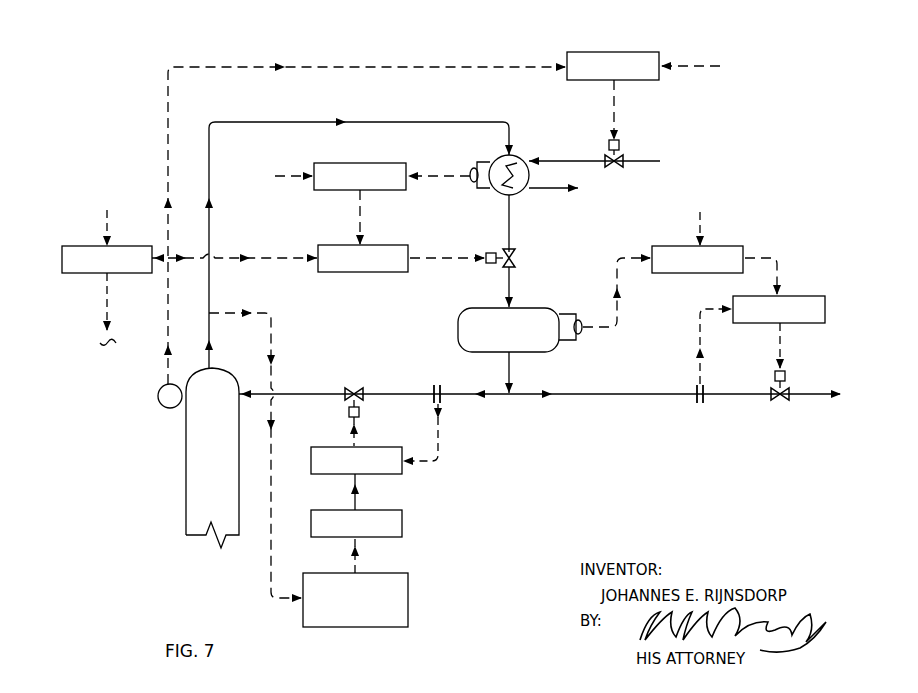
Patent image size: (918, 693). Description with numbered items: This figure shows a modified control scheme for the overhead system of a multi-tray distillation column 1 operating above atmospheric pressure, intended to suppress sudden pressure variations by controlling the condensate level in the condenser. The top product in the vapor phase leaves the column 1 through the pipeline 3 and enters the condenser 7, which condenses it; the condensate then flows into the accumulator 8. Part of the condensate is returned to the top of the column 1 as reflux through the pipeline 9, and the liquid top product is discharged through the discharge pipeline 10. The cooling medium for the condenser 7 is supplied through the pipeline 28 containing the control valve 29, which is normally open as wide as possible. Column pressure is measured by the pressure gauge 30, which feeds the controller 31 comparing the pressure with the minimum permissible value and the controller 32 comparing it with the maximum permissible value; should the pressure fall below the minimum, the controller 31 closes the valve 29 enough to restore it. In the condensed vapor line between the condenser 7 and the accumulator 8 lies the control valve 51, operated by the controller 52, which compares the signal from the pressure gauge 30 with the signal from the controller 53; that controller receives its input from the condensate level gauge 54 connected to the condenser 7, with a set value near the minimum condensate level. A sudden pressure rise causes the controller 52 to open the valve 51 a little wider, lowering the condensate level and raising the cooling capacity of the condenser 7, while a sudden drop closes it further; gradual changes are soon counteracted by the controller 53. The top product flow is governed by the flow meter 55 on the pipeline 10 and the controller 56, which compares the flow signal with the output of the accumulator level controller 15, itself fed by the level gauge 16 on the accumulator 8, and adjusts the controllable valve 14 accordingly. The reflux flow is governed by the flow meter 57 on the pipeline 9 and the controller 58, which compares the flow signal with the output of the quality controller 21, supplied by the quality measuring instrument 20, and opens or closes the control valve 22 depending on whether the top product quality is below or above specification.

The distillation column 1 is at (217, 507).
The pipeline 3 is at (268, 122).
The condenser 7 is at (513, 196).
The accumulator 8 is at (493, 307).
The pipeline 9 is at (291, 394).
The discharge pipeline 10 is at (604, 394).
The controllable valve 14 is at (781, 400).
The controller 15 is at (708, 246).
The level gauge 16 is at (585, 321).
The quality measuring instrument 20 is at (408, 616).
The controller 21 is at (403, 526).
The control valve 22 is at (345, 388).
The pipeline 28 is at (546, 161).
The control valve 29 is at (617, 168).
The pressure gauge 30 is at (162, 408).
The controller 31 is at (614, 52).
The controller 32 is at (115, 246).
The control valve 51 is at (515, 258).
The controller 52 is at (380, 245).
The controller 53 is at (363, 163).
The condensate level gauge 54 is at (470, 182).
The flow meter 55 is at (705, 392).
The controller 56 is at (790, 296).
The flow meter 57 is at (442, 402).
The controller 58 is at (375, 447).